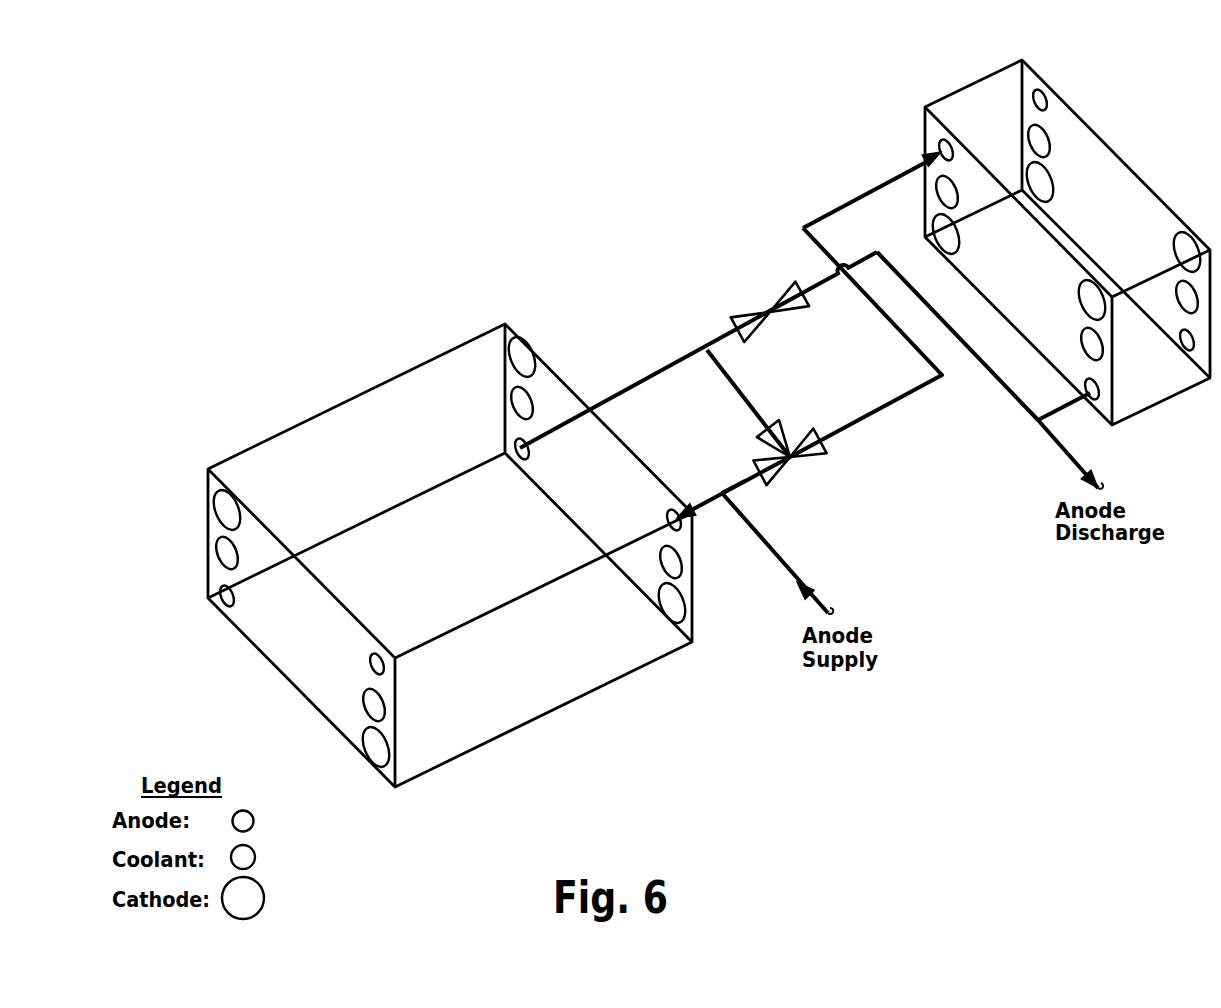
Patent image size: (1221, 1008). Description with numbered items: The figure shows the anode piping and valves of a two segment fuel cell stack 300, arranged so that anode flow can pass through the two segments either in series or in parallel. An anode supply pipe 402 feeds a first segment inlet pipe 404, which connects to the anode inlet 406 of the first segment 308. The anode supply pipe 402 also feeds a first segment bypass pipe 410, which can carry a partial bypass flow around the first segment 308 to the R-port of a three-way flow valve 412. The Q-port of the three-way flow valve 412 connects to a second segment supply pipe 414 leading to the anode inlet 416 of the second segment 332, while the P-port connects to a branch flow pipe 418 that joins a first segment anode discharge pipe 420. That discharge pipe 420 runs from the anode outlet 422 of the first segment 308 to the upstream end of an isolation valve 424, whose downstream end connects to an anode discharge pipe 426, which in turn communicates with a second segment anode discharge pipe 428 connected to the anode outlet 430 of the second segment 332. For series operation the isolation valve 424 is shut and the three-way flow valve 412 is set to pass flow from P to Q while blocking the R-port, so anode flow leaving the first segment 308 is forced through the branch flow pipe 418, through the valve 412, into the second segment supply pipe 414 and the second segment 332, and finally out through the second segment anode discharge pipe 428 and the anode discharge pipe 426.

The fuel cell stack 300 is at (378, 155).
The first segment 308 is at (288, 468).
The second segment 332 is at (963, 102).
The anode supply pipe 402 is at (777, 552).
The first segment inlet pipe 404 is at (705, 503).
The anode inlet 406 is at (678, 512).
The first segment bypass pipe 410 is at (735, 482).
The three-way flow valve 412 is at (798, 466).
The second segment supply pipe 414 is at (870, 418).
The anode inlet 416 is at (940, 147).
The branch flow pipe 418 is at (747, 397).
The first segment anode discharge pipe 420 is at (677, 362).
The anode outlet 422 is at (518, 446).
The isolation valve 424 is at (752, 312).
The anode discharge pipe 426 is at (968, 352).
The second segment anode discharge pipe 428 is at (1058, 413).
The anode outlet 430 is at (1100, 394).